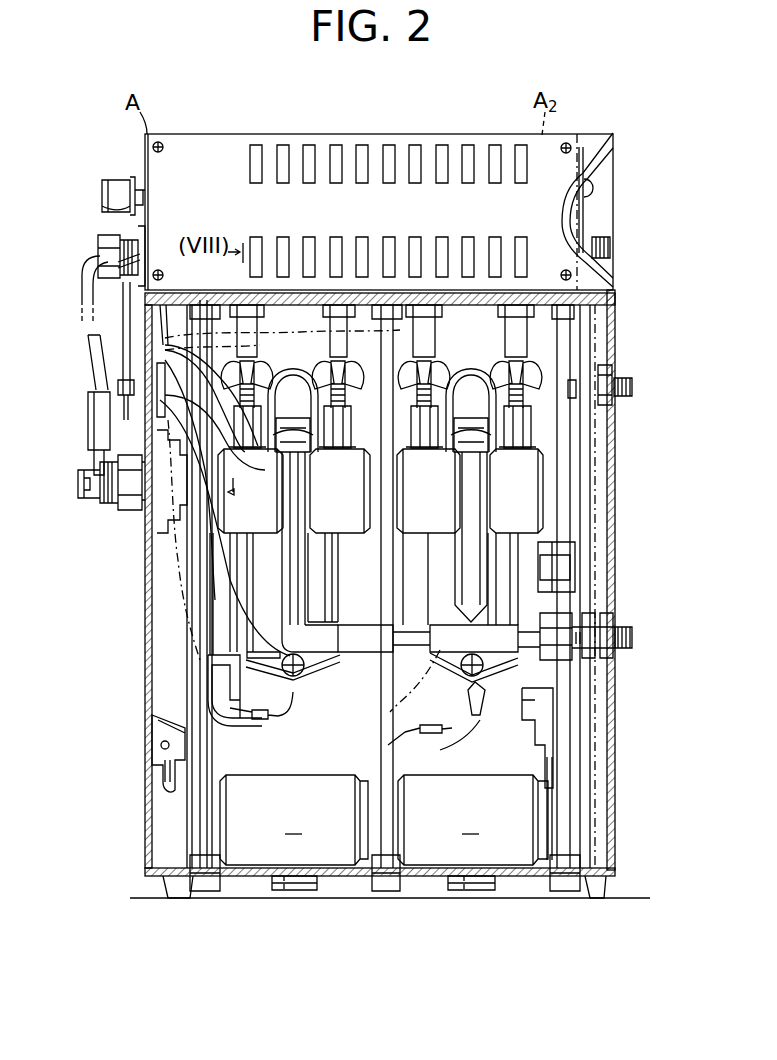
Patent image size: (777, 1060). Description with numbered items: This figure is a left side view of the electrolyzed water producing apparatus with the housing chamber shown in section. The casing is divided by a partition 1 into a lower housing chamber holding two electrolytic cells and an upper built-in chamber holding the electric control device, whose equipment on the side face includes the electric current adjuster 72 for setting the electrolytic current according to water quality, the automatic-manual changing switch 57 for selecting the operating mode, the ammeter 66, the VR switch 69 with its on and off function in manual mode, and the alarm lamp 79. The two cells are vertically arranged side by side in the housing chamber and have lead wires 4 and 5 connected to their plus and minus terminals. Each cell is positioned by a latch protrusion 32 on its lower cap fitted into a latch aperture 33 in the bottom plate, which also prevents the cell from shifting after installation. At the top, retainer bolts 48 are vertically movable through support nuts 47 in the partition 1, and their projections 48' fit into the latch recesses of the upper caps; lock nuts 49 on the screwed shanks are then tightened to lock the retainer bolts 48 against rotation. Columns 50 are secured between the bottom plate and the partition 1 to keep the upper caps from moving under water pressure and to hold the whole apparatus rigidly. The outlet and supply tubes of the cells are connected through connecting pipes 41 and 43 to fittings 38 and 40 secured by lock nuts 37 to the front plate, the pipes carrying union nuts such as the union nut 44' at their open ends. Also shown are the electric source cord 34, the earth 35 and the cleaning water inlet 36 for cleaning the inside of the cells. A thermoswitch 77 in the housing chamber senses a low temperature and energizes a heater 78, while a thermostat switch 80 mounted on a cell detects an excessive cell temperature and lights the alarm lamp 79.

The partition 1 is at (200, 300).
The lead wire 4 is at (316, 438).
The lead wire 5 is at (299, 698).
The latch protrusion 32 is at (308, 890).
The latch aperture 33 is at (284, 880).
The electric source cord 34 is at (98, 390).
The earth 35 is at (115, 356).
The cleaning water inlet 36 is at (90, 505).
The lock nut 37 is at (604, 614).
The fitting 38 is at (636, 638).
The fitting 40 is at (635, 390).
The connecting pipe 41 is at (312, 568).
The connecting pipe 43 is at (230, 715).
The union nut 44' is at (593, 725).
The support nut 47 is at (320, 338).
The retainer bolt 48 is at (434, 475).
The projection 48' is at (426, 489).
The lock nut 49 is at (240, 372).
The column 50 is at (208, 820).
The automatic-manual changing switch 57 is at (98, 260).
The ammeter 66 is at (600, 212).
The VR switch 69 is at (610, 250).
The electric current adjuster 72 is at (104, 200).
The thermoswitch 77 is at (575, 548).
The heater 78 is at (155, 752).
The alarm lamp 79 is at (598, 190).
The thermostat switch 80 is at (478, 702).